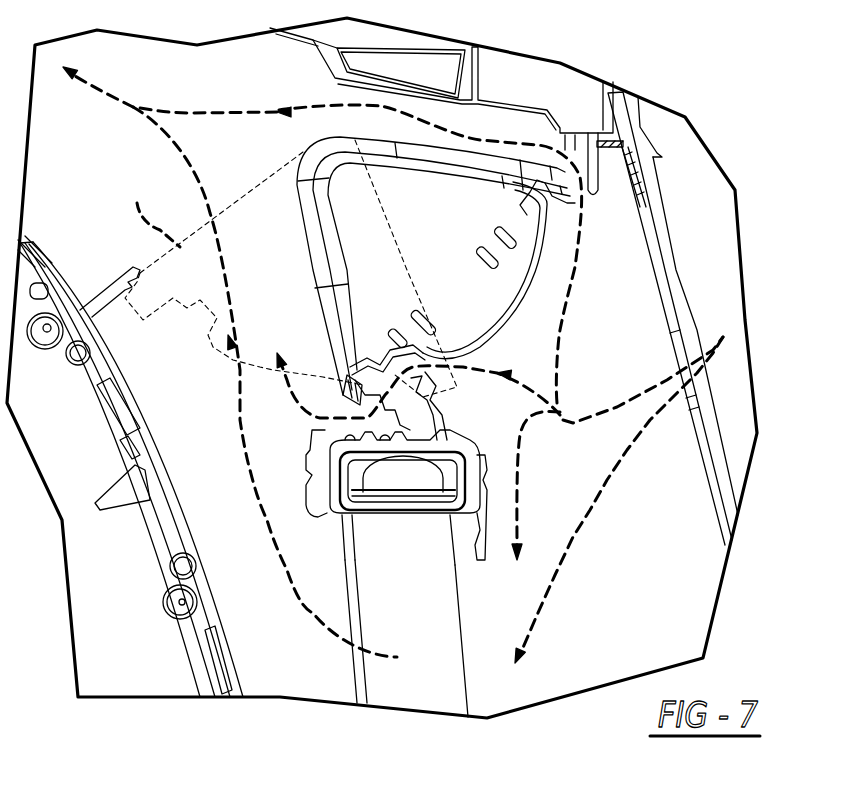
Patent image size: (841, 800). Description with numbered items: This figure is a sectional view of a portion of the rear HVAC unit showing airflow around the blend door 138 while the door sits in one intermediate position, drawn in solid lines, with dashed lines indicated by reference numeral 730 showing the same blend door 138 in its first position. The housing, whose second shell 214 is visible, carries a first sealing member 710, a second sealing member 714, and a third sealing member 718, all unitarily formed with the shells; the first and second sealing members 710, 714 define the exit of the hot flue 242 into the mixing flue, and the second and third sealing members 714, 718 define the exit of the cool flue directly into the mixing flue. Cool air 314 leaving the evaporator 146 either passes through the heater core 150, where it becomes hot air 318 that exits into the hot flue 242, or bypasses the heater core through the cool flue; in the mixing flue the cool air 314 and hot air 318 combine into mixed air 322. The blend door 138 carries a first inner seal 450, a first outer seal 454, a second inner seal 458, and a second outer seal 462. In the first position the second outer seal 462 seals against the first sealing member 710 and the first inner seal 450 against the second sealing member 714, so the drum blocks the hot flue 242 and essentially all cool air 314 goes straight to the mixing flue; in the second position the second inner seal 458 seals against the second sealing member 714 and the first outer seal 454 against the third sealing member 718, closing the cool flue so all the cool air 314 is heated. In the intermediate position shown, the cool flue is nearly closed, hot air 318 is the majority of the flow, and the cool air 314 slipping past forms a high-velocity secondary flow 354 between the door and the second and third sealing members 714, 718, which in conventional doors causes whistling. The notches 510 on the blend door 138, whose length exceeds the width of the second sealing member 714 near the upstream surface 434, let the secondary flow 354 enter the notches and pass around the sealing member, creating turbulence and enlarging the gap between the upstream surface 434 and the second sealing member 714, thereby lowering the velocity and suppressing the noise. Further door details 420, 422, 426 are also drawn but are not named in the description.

The blend door 138 is at (324, 218).
The evaporator 146 is at (720, 273).
The heater core 150 is at (387, 678).
The second shell 214 is at (356, 80).
The hot flue 242 is at (243, 545).
The cool air 314 is at (556, 425).
The hot air 318 is at (250, 470).
The mixed air 322 is at (193, 113).
The secondary flow 354 is at (303, 400).
The arcuate guide 420 is at (478, 290).
The post 422 is at (568, 189).
The connector body 426 is at (357, 405).
The upstream surface 434 is at (480, 323).
The first inner seal 450 is at (568, 195).
The first outer seal 454 is at (570, 175).
The second inner seal 458 is at (367, 403).
The second outer seal 462 is at (343, 403).
The notches 510 is at (395, 350).
The first sealing member 710 is at (105, 293).
The second sealing member 714 is at (412, 400).
The third sealing member 718 is at (568, 175).
The dashed-line first position of blend door 730 is at (148, 209).